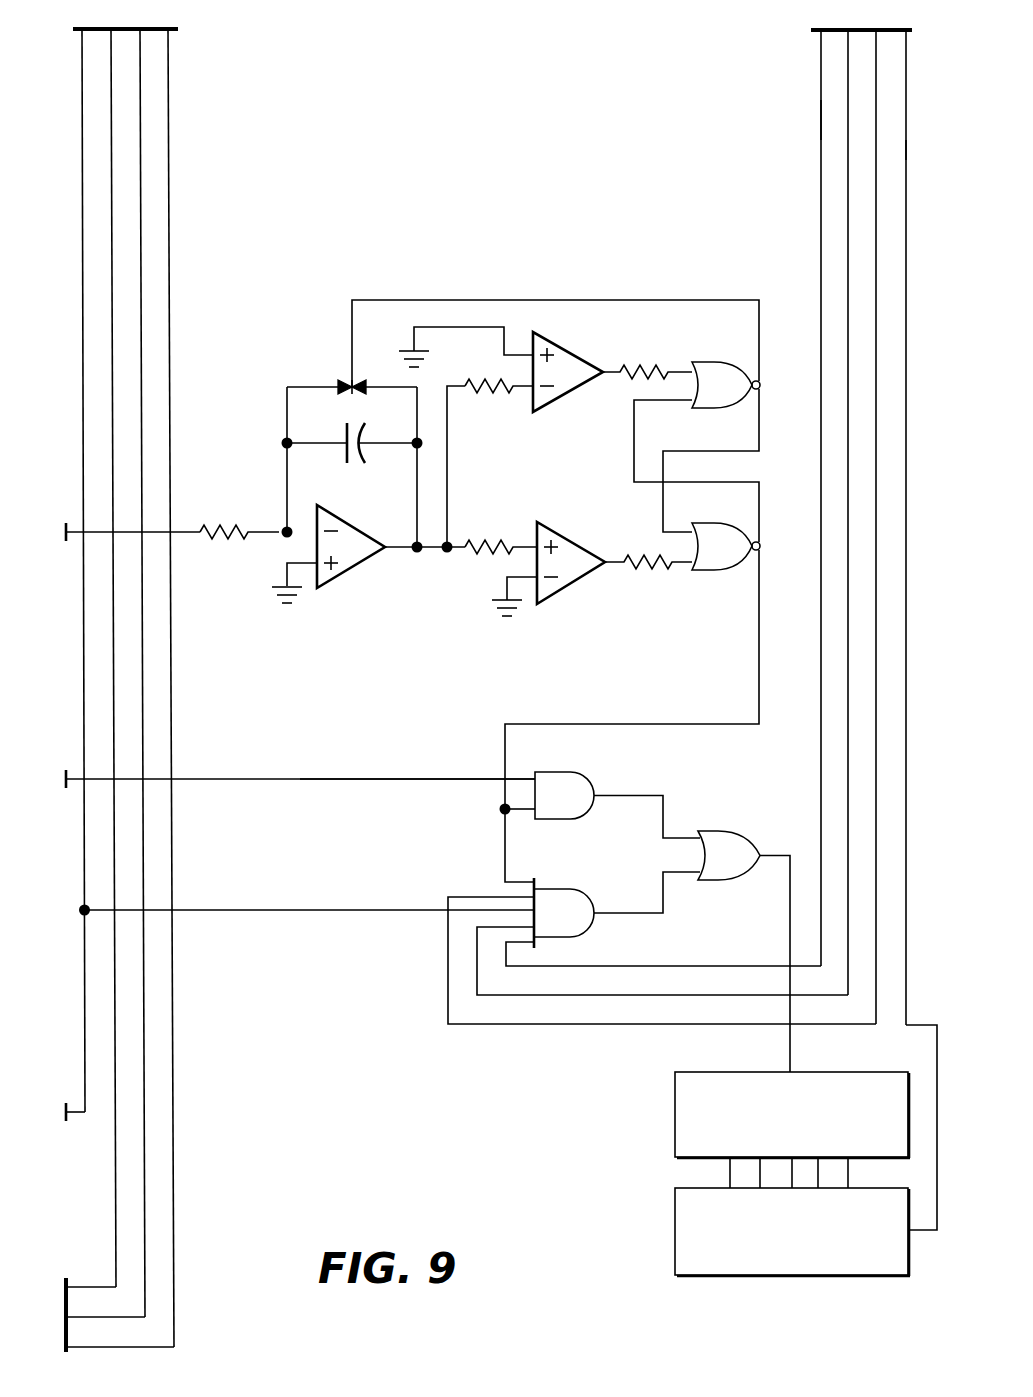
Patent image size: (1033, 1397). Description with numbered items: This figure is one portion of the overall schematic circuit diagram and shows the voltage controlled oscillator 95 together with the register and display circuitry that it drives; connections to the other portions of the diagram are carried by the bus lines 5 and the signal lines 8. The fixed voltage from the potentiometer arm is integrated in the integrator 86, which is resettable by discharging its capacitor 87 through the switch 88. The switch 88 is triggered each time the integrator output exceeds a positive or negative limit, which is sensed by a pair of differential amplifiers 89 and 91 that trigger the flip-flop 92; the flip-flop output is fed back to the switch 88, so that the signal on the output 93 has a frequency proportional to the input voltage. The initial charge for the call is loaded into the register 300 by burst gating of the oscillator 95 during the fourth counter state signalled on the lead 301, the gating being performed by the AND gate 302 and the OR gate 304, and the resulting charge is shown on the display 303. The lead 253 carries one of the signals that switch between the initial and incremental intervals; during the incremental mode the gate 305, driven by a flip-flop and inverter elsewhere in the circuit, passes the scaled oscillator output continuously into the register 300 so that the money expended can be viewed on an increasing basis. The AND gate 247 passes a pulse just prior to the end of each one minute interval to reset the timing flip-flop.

The bus lines 5 is at (492, 675).
The signal lines 8 is at (290, 936).
The integrator 86 is at (348, 517).
The capacitor 87 is at (360, 464).
The switch 88 is at (352, 387).
The differential amplifier 89 is at (565, 586).
The differential amplifier 91 is at (563, 392).
The flip-flop 92 is at (740, 362).
The output 93 is at (755, 630).
The voltage controlled oscillator 95 is at (549, 479).
The AND gate 247 is at (907, 1027).
The lead 253 is at (302, 778).
The register 300 is at (675, 1117).
The lead 301 is at (821, 117).
The AND gate 302 is at (587, 892).
The display 303 is at (906, 147).
The OR gate 304 is at (755, 833).
The gate 305 is at (578, 774).